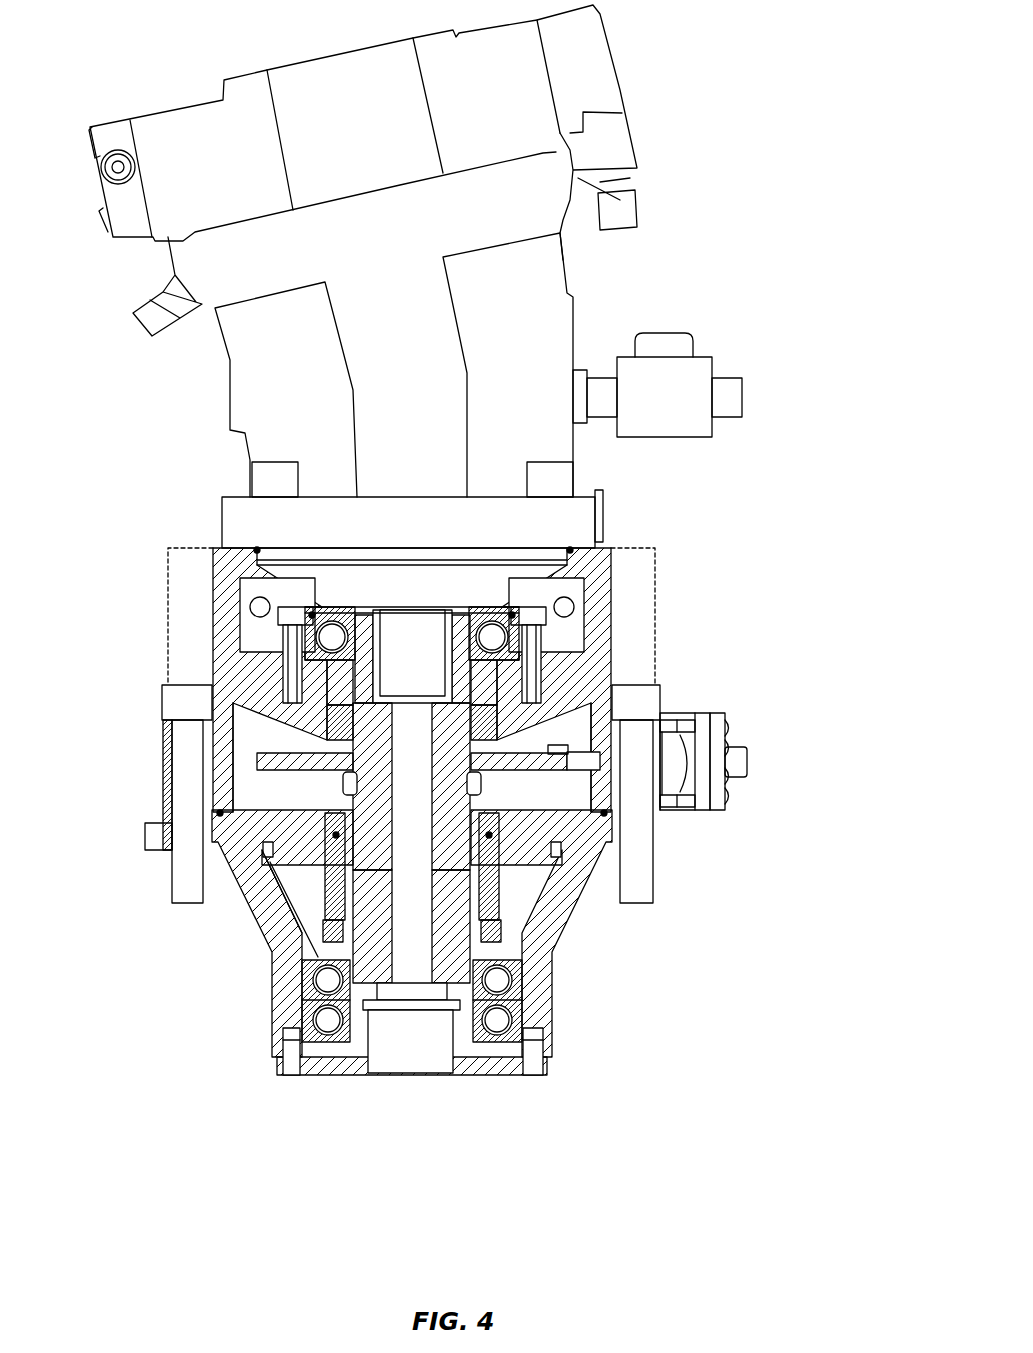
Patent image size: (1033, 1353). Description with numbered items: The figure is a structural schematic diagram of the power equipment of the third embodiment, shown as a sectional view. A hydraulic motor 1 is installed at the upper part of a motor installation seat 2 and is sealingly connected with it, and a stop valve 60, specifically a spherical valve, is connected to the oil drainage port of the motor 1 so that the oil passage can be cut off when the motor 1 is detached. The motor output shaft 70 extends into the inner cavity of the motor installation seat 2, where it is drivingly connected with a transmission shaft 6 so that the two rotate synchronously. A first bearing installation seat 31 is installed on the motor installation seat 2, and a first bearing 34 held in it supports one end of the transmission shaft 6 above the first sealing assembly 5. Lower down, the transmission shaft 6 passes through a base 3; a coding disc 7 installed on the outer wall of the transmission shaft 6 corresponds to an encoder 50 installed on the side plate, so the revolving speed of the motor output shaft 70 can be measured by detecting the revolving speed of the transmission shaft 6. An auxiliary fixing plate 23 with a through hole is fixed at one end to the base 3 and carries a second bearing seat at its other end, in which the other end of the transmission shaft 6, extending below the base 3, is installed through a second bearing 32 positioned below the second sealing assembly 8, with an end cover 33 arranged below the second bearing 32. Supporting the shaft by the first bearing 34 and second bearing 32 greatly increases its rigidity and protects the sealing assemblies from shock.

The motor 1 is at (255, 525).
The motor installation seat 2 is at (230, 670).
The base 3 is at (220, 814).
The first sealing assembly 5 is at (560, 682).
The transmission shaft 6 is at (365, 930).
The coding disc 7 is at (645, 868).
The second sealing assembly 8 is at (553, 947).
The auxiliary fixing plate 23 is at (242, 898).
The first bearing installation seat 31 is at (296, 628).
The second bearing 32 is at (318, 1016).
The end cover 33 is at (512, 1076).
The first bearing 34 is at (528, 620).
The encoder 50 is at (585, 750).
The stop valve 60 is at (678, 408).
The motor output shaft 70 is at (412, 640).